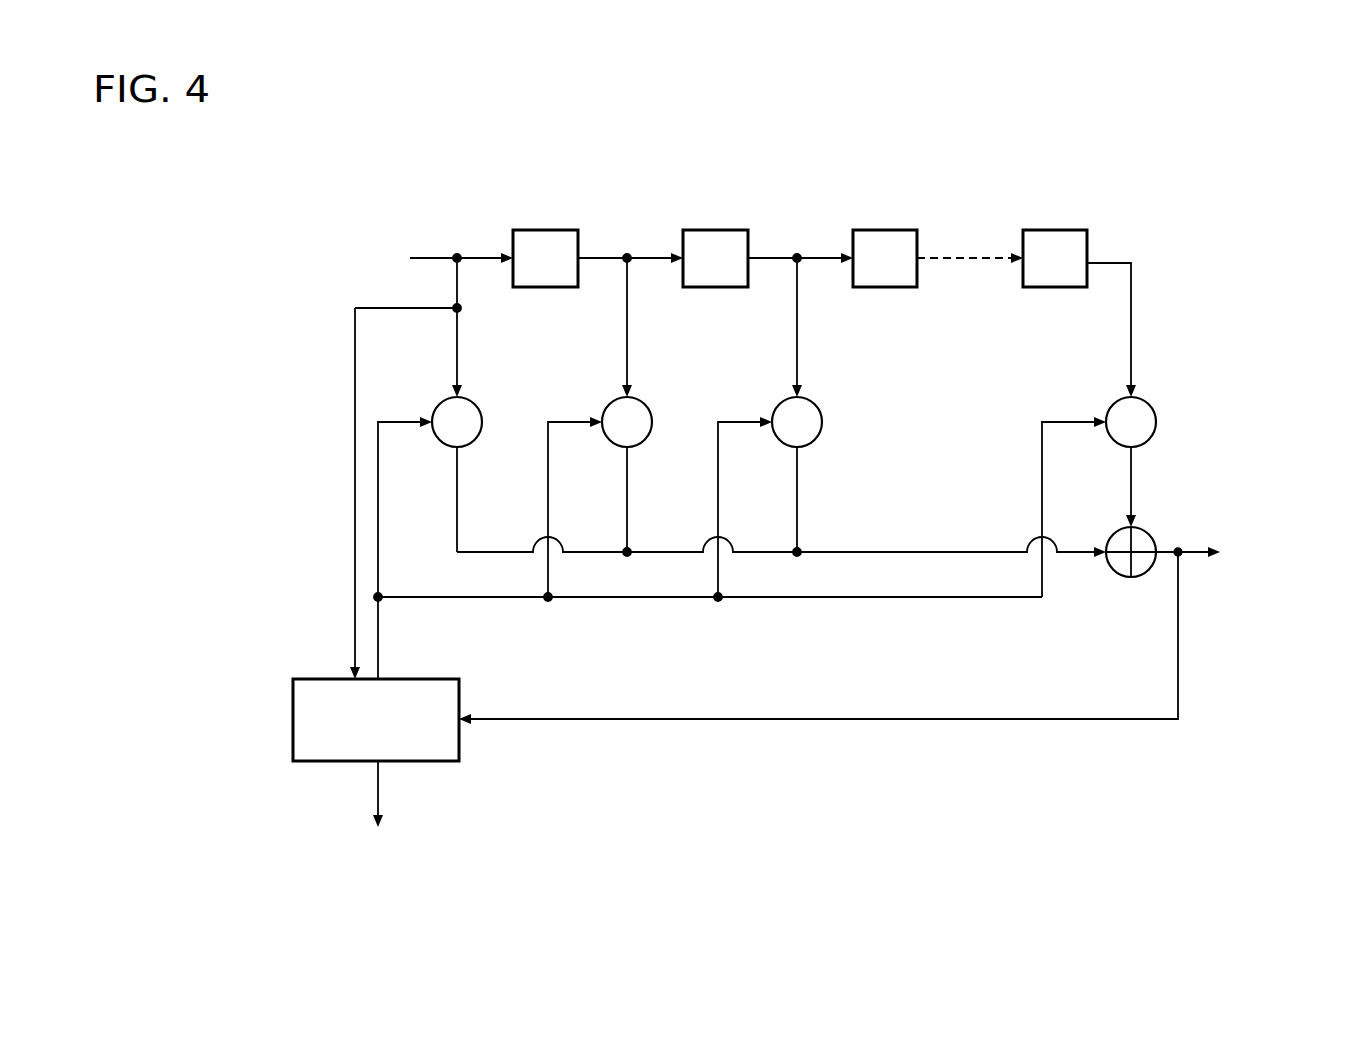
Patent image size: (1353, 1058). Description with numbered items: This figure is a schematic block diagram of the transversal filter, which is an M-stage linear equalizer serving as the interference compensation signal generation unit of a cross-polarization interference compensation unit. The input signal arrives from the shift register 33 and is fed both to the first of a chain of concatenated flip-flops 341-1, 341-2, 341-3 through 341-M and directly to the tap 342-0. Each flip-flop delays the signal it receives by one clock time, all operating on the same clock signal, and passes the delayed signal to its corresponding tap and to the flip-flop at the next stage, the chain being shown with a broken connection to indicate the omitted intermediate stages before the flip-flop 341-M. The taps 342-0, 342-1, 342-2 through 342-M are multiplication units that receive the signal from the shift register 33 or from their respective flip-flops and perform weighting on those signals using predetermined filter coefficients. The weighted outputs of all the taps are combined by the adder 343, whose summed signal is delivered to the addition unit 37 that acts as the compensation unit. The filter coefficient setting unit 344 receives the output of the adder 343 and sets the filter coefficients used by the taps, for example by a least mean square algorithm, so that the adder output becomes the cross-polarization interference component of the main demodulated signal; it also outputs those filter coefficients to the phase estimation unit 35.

The shift register 33 is at (362, 259).
The flip-flop 341-1 is at (533, 230).
The flip-flop 341-2 is at (718, 230).
The flip-flop 341-3 is at (878, 230).
The flip-flop 341-M is at (1058, 230).
The tap 342-0 is at (438, 404).
The tap 342-1 is at (608, 404).
The tap 342-2 is at (778, 404).
The tap 342-M is at (1112, 404).
The adder 343 is at (1148, 536).
The filter coefficient setting unit 344 is at (420, 679).
The addition unit 37 is at (1237, 553).
The phase estimation unit 35 is at (375, 811).